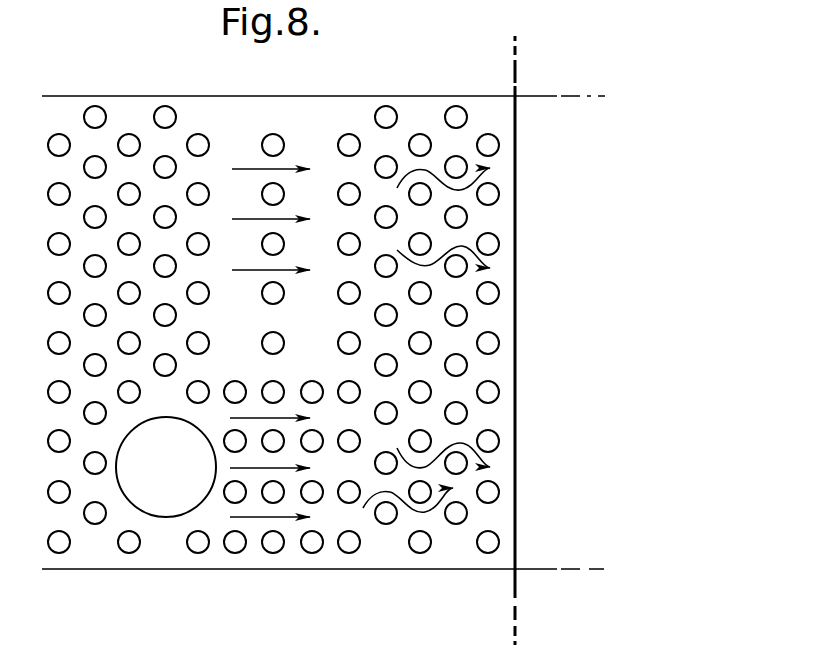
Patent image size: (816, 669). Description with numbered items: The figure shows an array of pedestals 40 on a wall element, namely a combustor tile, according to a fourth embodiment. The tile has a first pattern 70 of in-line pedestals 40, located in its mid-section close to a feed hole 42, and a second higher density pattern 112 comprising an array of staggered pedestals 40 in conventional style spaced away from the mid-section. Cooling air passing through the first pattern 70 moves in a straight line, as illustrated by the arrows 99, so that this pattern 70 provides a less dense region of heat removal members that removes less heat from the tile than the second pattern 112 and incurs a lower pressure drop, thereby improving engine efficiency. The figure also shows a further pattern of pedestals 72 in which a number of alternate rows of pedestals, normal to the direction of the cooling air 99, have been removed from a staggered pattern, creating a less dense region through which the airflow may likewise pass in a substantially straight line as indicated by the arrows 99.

The pattern of pedestals 72 is at (247, 112).
The arrows 99 is at (291, 169).
The pedestals 40 is at (490, 194).
The feed hole 42 is at (118, 518).
The first pattern 70 is at (300, 564).
The second higher density pattern 112 is at (503, 366).